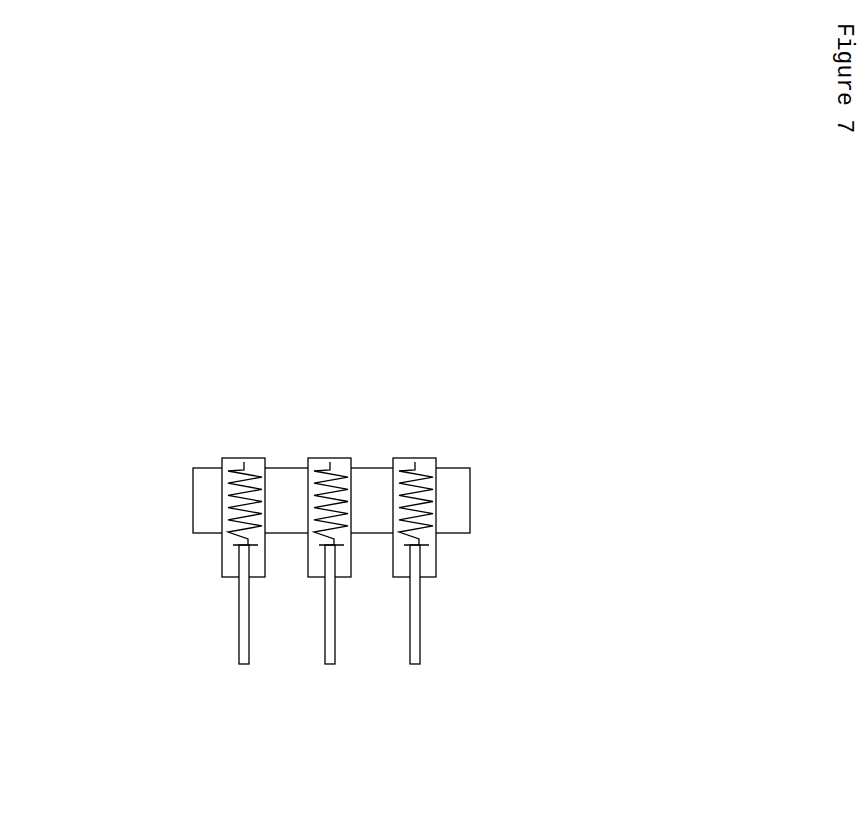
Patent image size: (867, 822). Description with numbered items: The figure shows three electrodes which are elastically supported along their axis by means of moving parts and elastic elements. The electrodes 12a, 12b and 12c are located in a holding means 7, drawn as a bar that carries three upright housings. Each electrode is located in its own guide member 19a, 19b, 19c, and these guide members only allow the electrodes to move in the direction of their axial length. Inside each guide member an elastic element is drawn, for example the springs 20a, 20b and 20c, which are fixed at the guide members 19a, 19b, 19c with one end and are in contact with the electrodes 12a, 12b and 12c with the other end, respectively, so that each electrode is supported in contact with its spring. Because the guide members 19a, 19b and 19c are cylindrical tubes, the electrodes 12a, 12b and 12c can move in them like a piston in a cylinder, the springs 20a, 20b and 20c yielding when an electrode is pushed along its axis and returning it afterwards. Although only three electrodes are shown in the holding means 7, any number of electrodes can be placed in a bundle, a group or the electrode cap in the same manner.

The holding means 7 is at (179, 517).
The guide member 19a is at (241, 453).
The guide member 19b is at (325, 453).
The guide member 19c is at (427, 456).
The spring 20a is at (261, 497).
The spring 20b is at (346, 495).
The spring 20c is at (435, 507).
The electrode 12a is at (223, 642).
The electrode 12b is at (311, 674).
The electrode 12c is at (433, 669).